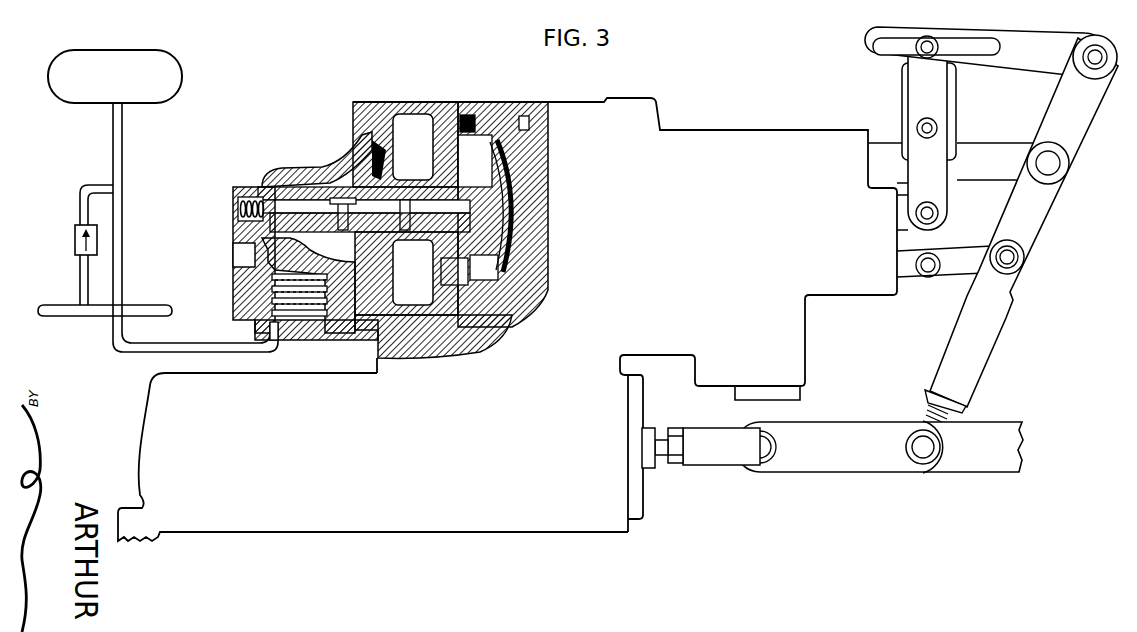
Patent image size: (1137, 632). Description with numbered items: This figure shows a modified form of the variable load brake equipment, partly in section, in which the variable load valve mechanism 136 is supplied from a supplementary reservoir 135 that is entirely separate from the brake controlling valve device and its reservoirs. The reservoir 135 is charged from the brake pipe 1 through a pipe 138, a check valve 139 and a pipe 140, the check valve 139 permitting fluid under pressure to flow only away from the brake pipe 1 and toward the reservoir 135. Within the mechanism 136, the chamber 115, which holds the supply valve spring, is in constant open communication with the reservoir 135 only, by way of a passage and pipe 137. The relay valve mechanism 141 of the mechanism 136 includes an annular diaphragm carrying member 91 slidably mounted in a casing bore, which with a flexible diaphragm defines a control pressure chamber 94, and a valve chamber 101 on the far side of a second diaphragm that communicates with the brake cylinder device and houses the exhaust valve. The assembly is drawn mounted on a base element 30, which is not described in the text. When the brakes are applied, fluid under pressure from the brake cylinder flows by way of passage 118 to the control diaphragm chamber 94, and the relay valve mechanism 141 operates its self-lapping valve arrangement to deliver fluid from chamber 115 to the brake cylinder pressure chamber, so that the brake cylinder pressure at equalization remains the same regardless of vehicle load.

The brake pipe 1 is at (62, 314).
The base housing 30 is at (352, 536).
The annular diaphragm carrying member 91 is at (551, 116).
The pressure chamber 94 is at (495, 118).
The valve chamber 101 is at (342, 178).
The chamber 115 is at (250, 192).
The passage 118 is at (372, 356).
The supplementary reservoir 135 is at (163, 62).
The variable load valve mechanism 136 is at (633, 93).
The passage and pipe 137 is at (180, 352).
The pipe 138 is at (84, 272).
The check valve 139 is at (76, 240).
The pipe 140 is at (80, 193).
The relay valve mechanism 141 is at (533, 93).